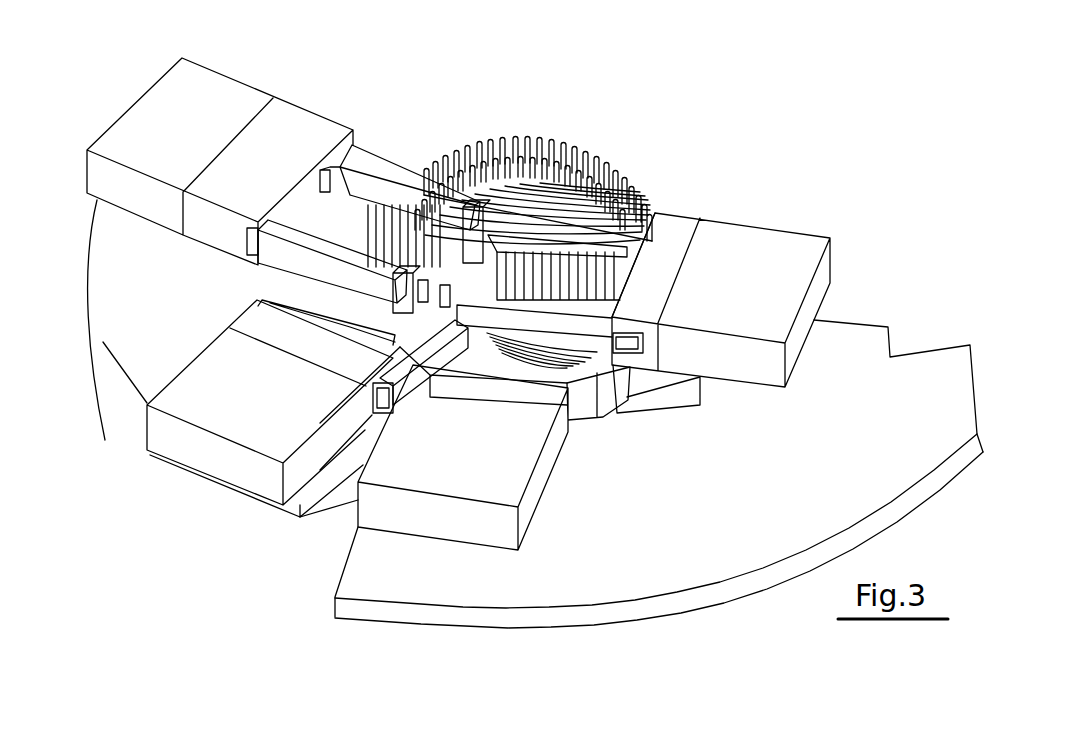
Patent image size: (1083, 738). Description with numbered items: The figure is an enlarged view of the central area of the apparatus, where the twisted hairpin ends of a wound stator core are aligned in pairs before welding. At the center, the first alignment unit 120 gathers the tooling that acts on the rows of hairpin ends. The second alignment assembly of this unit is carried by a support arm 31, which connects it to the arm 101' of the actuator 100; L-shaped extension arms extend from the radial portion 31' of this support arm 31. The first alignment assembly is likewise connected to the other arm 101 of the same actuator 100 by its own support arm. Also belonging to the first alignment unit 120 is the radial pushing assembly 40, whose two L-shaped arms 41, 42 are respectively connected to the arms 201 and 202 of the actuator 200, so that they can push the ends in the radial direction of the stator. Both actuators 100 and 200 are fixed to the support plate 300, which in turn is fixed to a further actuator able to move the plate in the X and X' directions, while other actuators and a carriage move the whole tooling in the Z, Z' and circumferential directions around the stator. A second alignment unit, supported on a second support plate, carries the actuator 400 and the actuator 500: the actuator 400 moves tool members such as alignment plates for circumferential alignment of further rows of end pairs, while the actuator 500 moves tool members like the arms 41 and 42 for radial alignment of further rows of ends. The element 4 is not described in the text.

The stator assembly 4 is at (668, 195).
The radial pushing assembly 40 is at (343, 93).
The arm 42 is at (486, 262).
The first alignment unit 120 is at (568, 127).
The actuator 200 is at (167, 118).
The arm of actuator 200 201 is at (307, 245).
The arm of actuator 200 202 is at (370, 163).
The actuator 100 is at (245, 422).
The arm of actuator 100 101 is at (326, 313).
The arm of actuator 100 101' is at (412, 402).
The support arm 31 is at (505, 355).
The radial portion 31' is at (547, 233).
The arm 41 is at (397, 343).
The support plate 300 is at (135, 323).
The actuator 400 is at (508, 468).
The actuator 500 is at (752, 263).